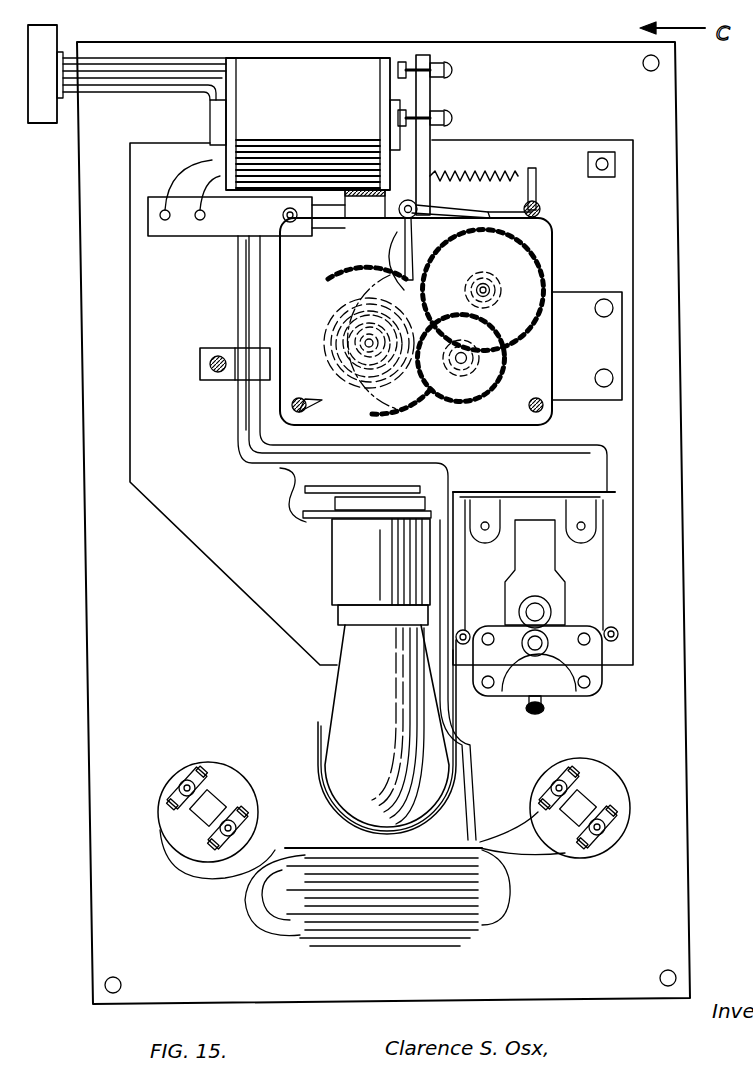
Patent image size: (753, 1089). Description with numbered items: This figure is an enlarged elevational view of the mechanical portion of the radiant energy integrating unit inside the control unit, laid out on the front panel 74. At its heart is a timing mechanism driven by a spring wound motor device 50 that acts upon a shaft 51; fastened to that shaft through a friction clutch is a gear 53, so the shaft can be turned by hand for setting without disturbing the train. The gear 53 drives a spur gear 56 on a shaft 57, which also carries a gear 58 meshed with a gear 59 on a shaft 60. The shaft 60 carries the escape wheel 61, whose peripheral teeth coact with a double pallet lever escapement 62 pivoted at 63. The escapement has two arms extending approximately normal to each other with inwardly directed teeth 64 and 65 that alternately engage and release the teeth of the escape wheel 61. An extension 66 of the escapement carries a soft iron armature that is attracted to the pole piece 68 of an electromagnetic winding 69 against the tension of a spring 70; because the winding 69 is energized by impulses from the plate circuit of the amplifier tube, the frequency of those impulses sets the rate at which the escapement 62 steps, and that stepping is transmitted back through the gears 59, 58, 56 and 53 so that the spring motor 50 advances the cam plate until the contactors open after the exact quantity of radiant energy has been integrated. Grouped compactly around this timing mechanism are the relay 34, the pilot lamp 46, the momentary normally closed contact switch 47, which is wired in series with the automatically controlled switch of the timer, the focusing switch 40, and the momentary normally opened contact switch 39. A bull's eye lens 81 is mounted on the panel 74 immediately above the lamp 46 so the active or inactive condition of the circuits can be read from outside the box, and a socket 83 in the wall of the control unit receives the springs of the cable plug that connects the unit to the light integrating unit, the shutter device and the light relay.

The relay 34 is at (604, 612).
The momentary normally opened contact switch 39 is at (200, 750).
The focusing switch 40 is at (352, 944).
The pilot lamp 46 is at (348, 677).
The momentary contact normally closed switch 47 is at (600, 773).
The spring wound motor device 50 is at (357, 290).
The shaft 51 is at (366, 340).
The gear 53 is at (316, 312).
The spur gear 56 is at (462, 374).
The shaft 57 is at (468, 361).
The gear 58 is at (522, 386).
The gear 59 is at (497, 298).
The shaft 60 is at (478, 290).
The escape wheel 61 is at (533, 278).
The double pallet lever escapement 62 is at (465, 207).
The pivot 63 is at (412, 268).
The tooth 64 is at (520, 208).
The tooth 65 is at (398, 270).
The extension 66 is at (404, 80).
The pole piece 68 is at (404, 128).
The electromagnetic winding 69 is at (258, 178).
The spring 70 is at (482, 178).
The front panel 74 is at (98, 344).
The bull's eye lens 81 is at (326, 750).
The socket 83 is at (46, 127).